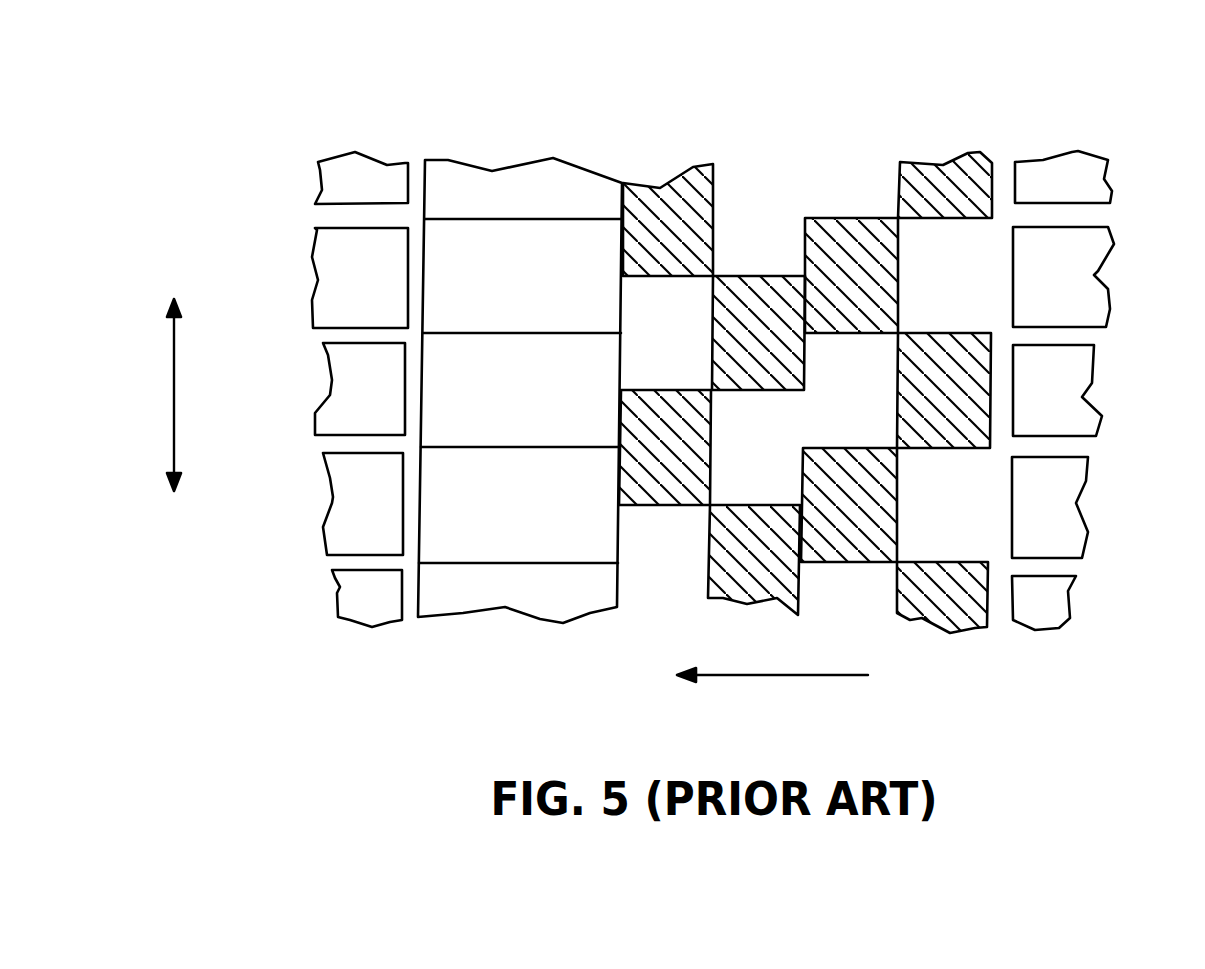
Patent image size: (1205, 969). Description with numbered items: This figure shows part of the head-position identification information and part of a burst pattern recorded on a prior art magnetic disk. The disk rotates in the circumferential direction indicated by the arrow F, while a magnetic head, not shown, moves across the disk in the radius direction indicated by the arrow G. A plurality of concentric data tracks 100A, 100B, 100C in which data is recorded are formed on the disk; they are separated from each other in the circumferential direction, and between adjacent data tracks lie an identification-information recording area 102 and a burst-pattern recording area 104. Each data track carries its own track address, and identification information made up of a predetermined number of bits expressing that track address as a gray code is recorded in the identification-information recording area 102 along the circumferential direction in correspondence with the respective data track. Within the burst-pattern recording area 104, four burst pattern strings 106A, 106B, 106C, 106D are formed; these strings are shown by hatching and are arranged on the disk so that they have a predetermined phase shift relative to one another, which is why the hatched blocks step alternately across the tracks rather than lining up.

The identification-information recording area 102 is at (612, 72).
The burst-pattern recording area 104 is at (998, 72).
The burst pattern string 106A is at (712, 137).
The burst pattern string 106B is at (717, 137).
The burst pattern string 106C is at (810, 137).
The burst pattern string 106D is at (905, 137).
The data track 100A is at (320, 275).
The data track 100B is at (330, 394).
The data track 100C is at (333, 497).
The arrow G is at (165, 395).
The arrow F is at (772, 688).